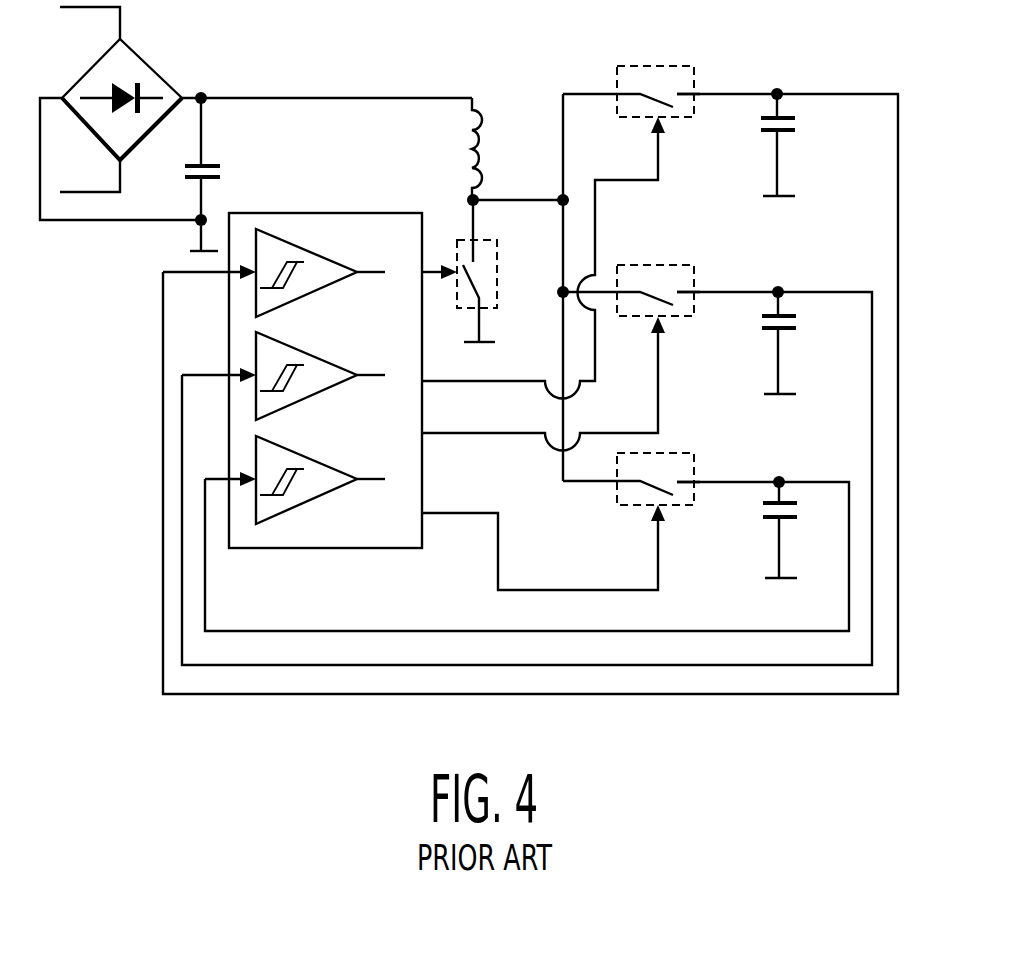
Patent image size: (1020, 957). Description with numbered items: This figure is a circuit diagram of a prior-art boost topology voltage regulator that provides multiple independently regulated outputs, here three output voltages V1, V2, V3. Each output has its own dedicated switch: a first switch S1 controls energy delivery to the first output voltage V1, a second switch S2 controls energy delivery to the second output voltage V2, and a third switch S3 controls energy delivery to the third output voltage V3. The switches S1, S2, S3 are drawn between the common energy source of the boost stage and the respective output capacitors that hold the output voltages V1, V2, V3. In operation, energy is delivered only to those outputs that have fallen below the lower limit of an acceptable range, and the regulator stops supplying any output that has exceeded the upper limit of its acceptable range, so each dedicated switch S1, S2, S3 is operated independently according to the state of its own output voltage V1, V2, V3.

The dedicated switch S1 is at (631, 74).
The dedicated switch S2 is at (631, 273).
The dedicated switch S3 is at (631, 464).
The output voltage V1 is at (796, 142).
The output voltage V2 is at (797, 340).
The output voltage V3 is at (797, 527).